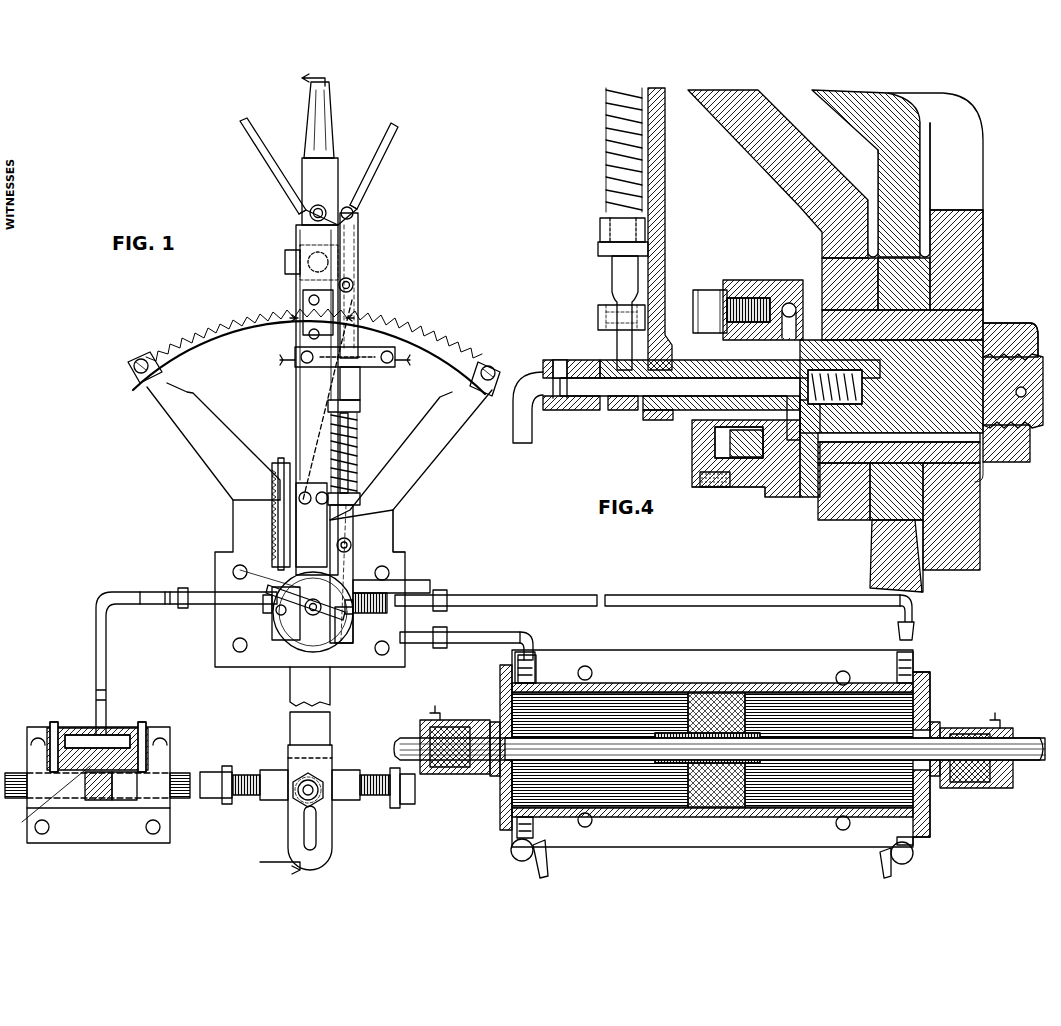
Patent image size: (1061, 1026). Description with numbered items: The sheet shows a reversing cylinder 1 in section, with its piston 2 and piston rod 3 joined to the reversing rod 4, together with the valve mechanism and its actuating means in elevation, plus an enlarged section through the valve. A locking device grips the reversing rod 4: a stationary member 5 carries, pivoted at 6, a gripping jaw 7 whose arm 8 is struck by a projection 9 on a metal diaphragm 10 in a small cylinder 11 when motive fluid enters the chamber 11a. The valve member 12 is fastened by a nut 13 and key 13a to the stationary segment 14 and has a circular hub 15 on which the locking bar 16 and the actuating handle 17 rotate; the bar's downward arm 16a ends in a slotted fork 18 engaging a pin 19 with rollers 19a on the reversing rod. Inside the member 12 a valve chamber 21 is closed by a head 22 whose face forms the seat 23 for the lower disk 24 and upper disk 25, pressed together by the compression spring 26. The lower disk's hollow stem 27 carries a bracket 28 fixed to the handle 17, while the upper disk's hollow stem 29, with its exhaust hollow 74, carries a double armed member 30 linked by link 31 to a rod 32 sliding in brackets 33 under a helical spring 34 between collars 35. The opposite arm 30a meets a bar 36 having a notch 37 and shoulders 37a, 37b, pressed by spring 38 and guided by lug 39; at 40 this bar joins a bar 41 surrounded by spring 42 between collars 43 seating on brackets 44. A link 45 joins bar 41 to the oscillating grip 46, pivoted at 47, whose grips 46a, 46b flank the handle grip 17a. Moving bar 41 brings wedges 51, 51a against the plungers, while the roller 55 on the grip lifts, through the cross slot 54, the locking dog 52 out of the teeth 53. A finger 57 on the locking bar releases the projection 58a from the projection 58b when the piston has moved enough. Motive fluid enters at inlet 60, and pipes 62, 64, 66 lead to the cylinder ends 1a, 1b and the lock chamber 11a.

In FIG. 1, the reversing cylinder 1 is at (720, 690).
In FIG. 1, the end of cylinder 1a is at (782, 705).
In FIG. 1, the opposite end of cylinder 1b is at (615, 720).
In FIG. 1, the piston 2 is at (707, 808).
In FIG. 1, the piston rod 3 is at (398, 740).
In FIG. 1, the reversing rod 4 is at (182, 776).
In FIG. 1, the stationary member 5 is at (343, 363).
In FIG. 1, the pivot 6 is at (315, 314).
In FIG. 1, the gripping jaw 7 is at (118, 802).
In FIG. 1, the arm 8 is at (100, 802).
In FIG. 1, the projection 9 is at (47, 801).
In FIG. 1, the metal diaphragm 10 is at (80, 727).
In FIG. 1, the small cylinder 11 is at (140, 737).
In FIG. 1, the chamber 11a is at (112, 735).
In FIG. 4, the member 12 is at (770, 500).
In FIG. 4, the nut 13 is at (1018, 432).
In FIG. 4, the key 13a is at (985, 460).
In FIG. 1, the stationary segment 14 is at (447, 368).
In FIG. 4, the stationary segment 14 is at (985, 266).
In FIG. 4, the circular hub 15 is at (865, 462).
In FIG. 1, the locking bar 16 is at (360, 392).
In FIG. 4, the locking bar 16 is at (856, 122).
In FIG. 1, the downwardly projecting arm 16a is at (330, 689).
In FIG. 4, the downwardly projecting arm 16a is at (921, 584).
In FIG. 1, the valve actuating handle 17 is at (296, 420).
In FIG. 4, the valve actuating handle 17 is at (774, 166).
In FIG. 1, the grip 17a is at (326, 124).
In FIG. 1, the slotted fork 18 is at (332, 831).
In FIG. 1, the pin 19 is at (320, 785).
In FIG. 1, the anti-friction rollers 19a is at (306, 802).
In FIG. 4, the valve chamber 21 is at (806, 497).
In FIG. 4, the head 22 is at (730, 445).
In FIG. 4, the seat 23 is at (738, 422).
In FIG. 4, the first or lower rotary disk 24 is at (748, 490).
In FIG. 4, the second or upper rotary disk 25 is at (768, 296).
In FIG. 4, the compression spring 26 is at (862, 384).
In FIG. 4, the hollow stem 27 is at (676, 416).
In FIG. 1, the arm or bracket 28 is at (305, 599).
In FIG. 4, the arm or bracket 28 is at (665, 260).
In FIG. 4, the hollow stem 29 is at (632, 412).
In FIG. 1, the double armed member 30 is at (298, 640).
In FIG. 4, the double armed member 30 is at (608, 405).
In FIG. 1, the opposite arm 30a is at (314, 622).
In FIG. 1, the link 31 is at (272, 605).
In FIG. 4, the link 31 is at (614, 341).
In FIG. 1, the rod 32 is at (276, 585).
In FIG. 4, the rod 32 is at (612, 272).
In FIG. 1, the brackets 33 is at (300, 482).
In FIG. 4, the brackets 33 is at (598, 250).
In FIG. 1, the helical spring 34 is at (272, 518).
In FIG. 4, the helical spring 34 is at (605, 158).
In FIG. 1, the collars 35 is at (278, 490).
In FIG. 4, the collars 35 is at (600, 230).
In FIG. 1, the bar 36 is at (345, 562).
In FIG. 1, the notch 37 is at (395, 583).
In FIG. 1, the shoulder 37a is at (355, 580).
In FIG. 1, the shoulder 37b is at (340, 643).
In FIG. 1, the spring 38 is at (376, 609).
In FIG. 1, the guiding lug 39 is at (362, 585).
In FIG. 1, the pivot 40 is at (351, 545).
In FIG. 1, the bar 41 is at (353, 518).
In FIG. 1, the helical spring 42 is at (360, 450).
In FIG. 1, the collars 43 is at (350, 420).
In FIG. 1, the brackets 44 is at (360, 407).
In FIG. 1, the link 45 is at (358, 255).
In FIG. 1, the oscillating handle grip 46 is at (296, 215).
In FIG. 1, the grip 46a is at (265, 172).
In FIG. 1, the grip 46b is at (378, 166).
In FIG. 1, the pivot 47 is at (322, 206).
In FIG. 1, the wedge-shaped projection 51 is at (356, 351).
In FIG. 1, the wedge-shaped projection 51a is at (360, 390).
In FIG. 1, the locking dog 52 is at (296, 273).
In FIG. 1, the teeth 53 is at (455, 350).
In FIG. 1, the cross slot 54 is at (285, 260).
In FIG. 1, the roller 55 is at (308, 256).
In FIG. 1, the finger 57 is at (302, 338).
In FIG. 1, the projection 58a is at (322, 368).
In FIG. 1, the lateral projection 58b is at (353, 288).
In FIG. 4, the inlet 60 is at (790, 302).
In FIG. 1, the pipe 62 is at (654, 604).
In FIG. 1, the pipe 64 is at (470, 640).
In FIG. 1, the pipe 66 is at (158, 594).
In FIG. 4, the hollow 74 is at (578, 362).